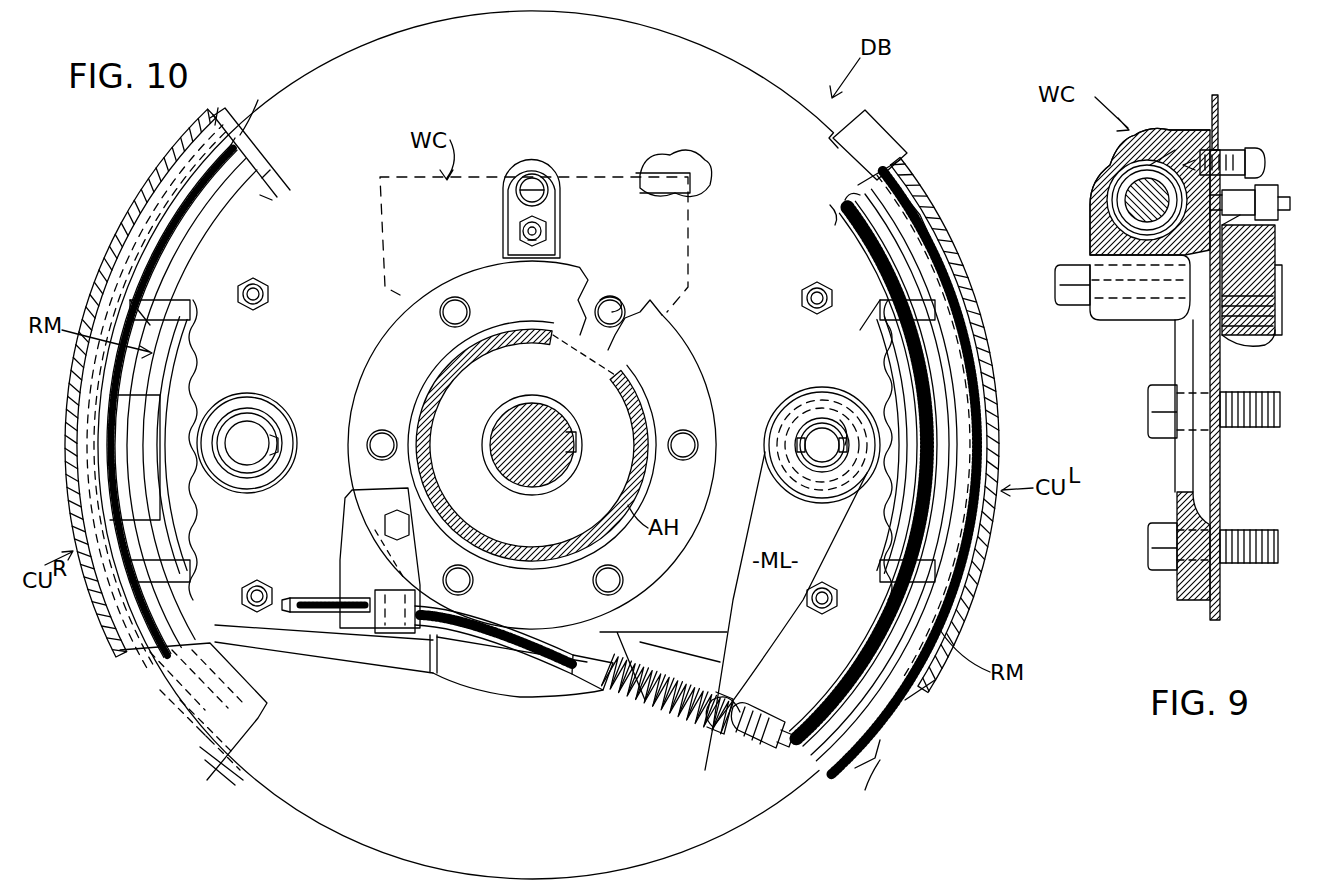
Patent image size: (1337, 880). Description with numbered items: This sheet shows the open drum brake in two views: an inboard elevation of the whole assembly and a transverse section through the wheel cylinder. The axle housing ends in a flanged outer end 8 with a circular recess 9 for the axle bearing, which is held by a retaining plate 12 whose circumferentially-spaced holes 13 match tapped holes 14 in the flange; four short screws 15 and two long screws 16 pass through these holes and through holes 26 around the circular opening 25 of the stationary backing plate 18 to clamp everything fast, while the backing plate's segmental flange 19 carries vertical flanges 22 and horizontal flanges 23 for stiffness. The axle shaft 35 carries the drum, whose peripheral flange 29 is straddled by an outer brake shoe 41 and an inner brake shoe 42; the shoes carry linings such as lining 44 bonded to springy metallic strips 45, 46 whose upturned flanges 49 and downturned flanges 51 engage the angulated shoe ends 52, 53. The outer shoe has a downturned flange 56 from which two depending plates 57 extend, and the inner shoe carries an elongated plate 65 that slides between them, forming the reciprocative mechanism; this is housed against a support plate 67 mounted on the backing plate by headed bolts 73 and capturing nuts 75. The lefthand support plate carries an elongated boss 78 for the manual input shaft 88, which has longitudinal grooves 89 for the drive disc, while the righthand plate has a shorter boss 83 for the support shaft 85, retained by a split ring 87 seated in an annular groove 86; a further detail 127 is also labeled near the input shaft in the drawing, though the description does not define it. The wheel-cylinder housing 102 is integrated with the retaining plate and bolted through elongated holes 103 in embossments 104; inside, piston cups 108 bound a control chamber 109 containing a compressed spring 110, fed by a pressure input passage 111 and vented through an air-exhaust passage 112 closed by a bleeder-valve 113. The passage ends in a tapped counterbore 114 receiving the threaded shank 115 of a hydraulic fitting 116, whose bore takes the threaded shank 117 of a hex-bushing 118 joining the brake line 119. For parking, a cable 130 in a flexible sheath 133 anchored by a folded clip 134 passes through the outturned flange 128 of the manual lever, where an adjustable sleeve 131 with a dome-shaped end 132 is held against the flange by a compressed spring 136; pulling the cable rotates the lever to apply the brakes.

In FIG. 10, the flanged outer end of the axle housing 8 is at (372, 348).
In FIG. 9, the flanged outer end of the axle housing 8 is at (1275, 300).
In FIG. 9, the circular recess 9 is at (1275, 320).
In FIG. 9, the retaining plate 12 is at (1177, 503).
In FIG. 9, the circumferentially-spaced holes 13 is at (1185, 575).
In FIG. 10, the tapped holes 14 is at (468, 312).
In FIG. 9, the tapped holes 14 is at (1278, 290).
In FIG. 10, the short screws 15 is at (388, 440).
In FIG. 9, the short screws 15 is at (1152, 440).
In FIG. 10, the long screws 16 is at (455, 300).
In FIG. 9, the long screws 16 is at (1062, 302).
In FIG. 10, the backing plate 18 is at (512, 786).
In FIG. 9, the backing plate 18 is at (1205, 620).
In FIG. 10, the segmental flange 19 is at (318, 68).
In FIG. 10, the vertical flanges 22 is at (120, 652).
In FIG. 10, the horizontal flanges 23 is at (775, 80).
In FIG. 10, the circular opening 25 is at (566, 450).
In FIG. 9, the circular opening 25 is at (1235, 345).
In FIG. 10, the holes 26 is at (628, 312).
In FIG. 10, the peripheral flange of the drum 29 is at (240, 135).
In FIG. 10, the axle shaft 35 is at (548, 470).
In FIG. 10, the outer brake shoe 41 is at (155, 178).
In FIG. 10, the inner brake shoe 42 is at (845, 225).
In FIG. 10, the lining 44 is at (855, 200).
In FIG. 10, the metallic strip 45 is at (935, 705).
In FIG. 10, the metallic strip 46 is at (845, 200).
In FIG. 10, the upturned flanges 49 is at (218, 108).
In FIG. 10, the downturned flanges 51 is at (270, 170).
In FIG. 10, the shoe ends 52 is at (195, 140).
In FIG. 10, the shoe ends 53 is at (275, 196).
In FIG. 10, the downturned flange 56 is at (135, 690).
In FIG. 10, the depending members (plates) 57 is at (145, 360).
In FIG. 10, the elongated member (plate) 65 is at (150, 395).
In FIG. 10, the support member (plate) 67 is at (145, 300).
In FIG. 10, the headed bolts 73 is at (265, 290).
In FIG. 10, the capturing nuts 75 is at (252, 285).
In FIG. 10, the lateral boss 78 is at (800, 415).
In FIG. 10, the lateral boss 83 is at (280, 490).
In FIG. 10, the support shaft 85 is at (245, 460).
In FIG. 10, the annular groove 86 is at (272, 425).
In FIG. 10, the split metallic retaining ring 87 is at (270, 435).
In FIG. 10, the manual input shaft 88 is at (828, 430).
In FIG. 10, the longitudinal grooves 89 is at (800, 425).
In FIG. 10, the wheel-cylinder body (housing) 102 is at (670, 178).
In FIG. 9, the wheel-cylinder body (housing) 102 is at (1109, 152).
In FIG. 9, the elongated holes 103 is at (1085, 315).
In FIG. 9, the embossments 104 is at (1105, 300).
In FIG. 9, the lip-type cup 108 is at (1130, 200).
In FIG. 9, the control chamber 109 is at (1140, 245).
In FIG. 9, the compressed spring 110 is at (1120, 210).
In FIG. 9, the pressure input passage 111 is at (1140, 281).
In FIG. 9, the air-exhaust passage 112 is at (1160, 165).
In FIG. 10, the bleeder-valve 113 is at (548, 156).
In FIG. 9, the bleeder-valve 113 is at (1240, 138).
In FIG. 9, the tapped counterbore 114 is at (1250, 175).
In FIG. 9, the threaded shank 115 is at (1245, 225).
In FIG. 10, the hydraulic fitting 116 is at (545, 222).
In FIG. 9, the hydraulic fitting 116 is at (1258, 190).
In FIG. 9, the threaded shank 117 is at (1240, 220).
In FIG. 9, the hex-bushing 118 is at (1278, 200).
In FIG. 10, the brake line 119 is at (545, 238).
In FIG. 9, the brake line 119 is at (1290, 205).
In FIG. 10, the pin 127 is at (842, 420).
In FIG. 10, the outturned flange 128 is at (709, 761).
In FIG. 10, the flexible link (cable) 130 is at (295, 612).
In FIG. 10, the adjustable collar (sleeve) 131 is at (748, 750).
In FIG. 10, the dome-shaped end 132 is at (740, 722).
In FIG. 10, the flexible sheath 133 is at (360, 633).
In FIG. 10, the folded bracket (clip) 134 is at (336, 523).
In FIG. 10, the compressed spring 136 is at (650, 715).